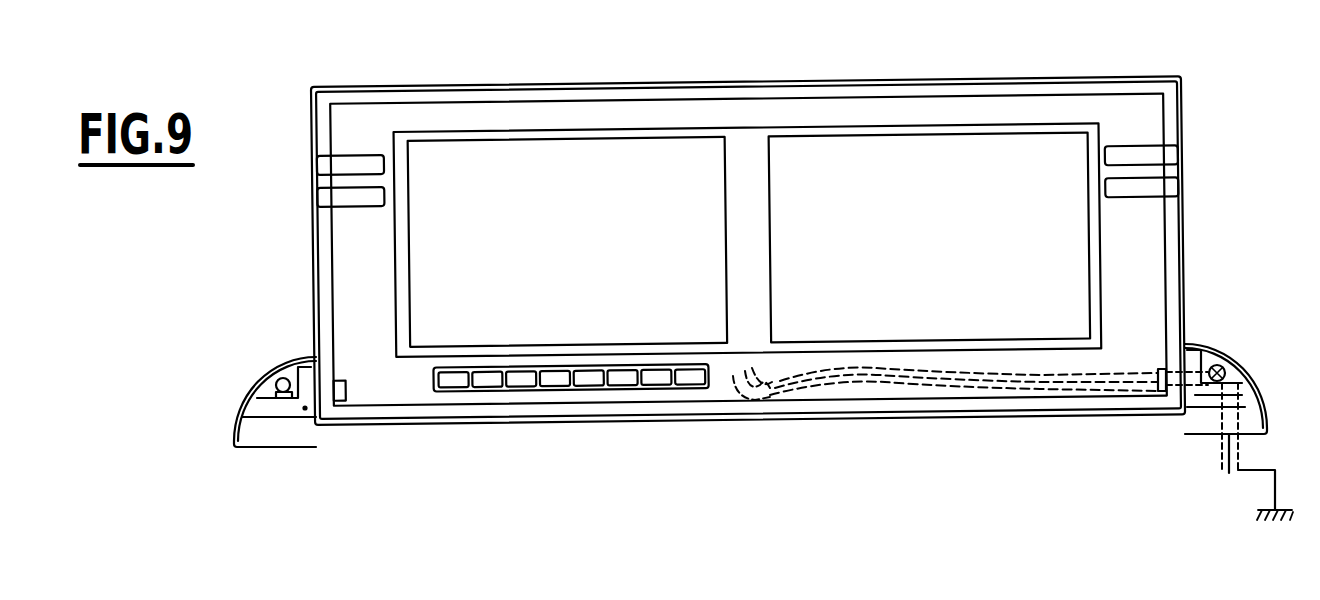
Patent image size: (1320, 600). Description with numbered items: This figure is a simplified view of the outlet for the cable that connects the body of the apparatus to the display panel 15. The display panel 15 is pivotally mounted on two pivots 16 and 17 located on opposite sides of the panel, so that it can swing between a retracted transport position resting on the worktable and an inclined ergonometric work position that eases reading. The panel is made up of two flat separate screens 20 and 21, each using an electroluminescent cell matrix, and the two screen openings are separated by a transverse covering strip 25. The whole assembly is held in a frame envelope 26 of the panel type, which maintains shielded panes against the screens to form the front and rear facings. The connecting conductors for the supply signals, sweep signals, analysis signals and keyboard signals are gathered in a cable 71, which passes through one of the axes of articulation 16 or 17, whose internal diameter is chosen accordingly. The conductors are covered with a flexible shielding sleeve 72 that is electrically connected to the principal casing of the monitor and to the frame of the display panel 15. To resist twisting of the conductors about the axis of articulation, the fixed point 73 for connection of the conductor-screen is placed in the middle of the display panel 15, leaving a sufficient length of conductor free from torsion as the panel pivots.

The display panel 15 is at (1032, 66).
The pivot 16 is at (255, 372).
The pivot 17 is at (1258, 352).
The flat screen 20 is at (508, 137).
The flat screen 21 is at (857, 168).
The transverse covering strip 25 is at (745, 143).
The frame envelope 26 is at (1170, 275).
The cable 71 is at (818, 398).
The flexible shielding sleeve 72 is at (938, 387).
The fixed point 73 is at (740, 433).